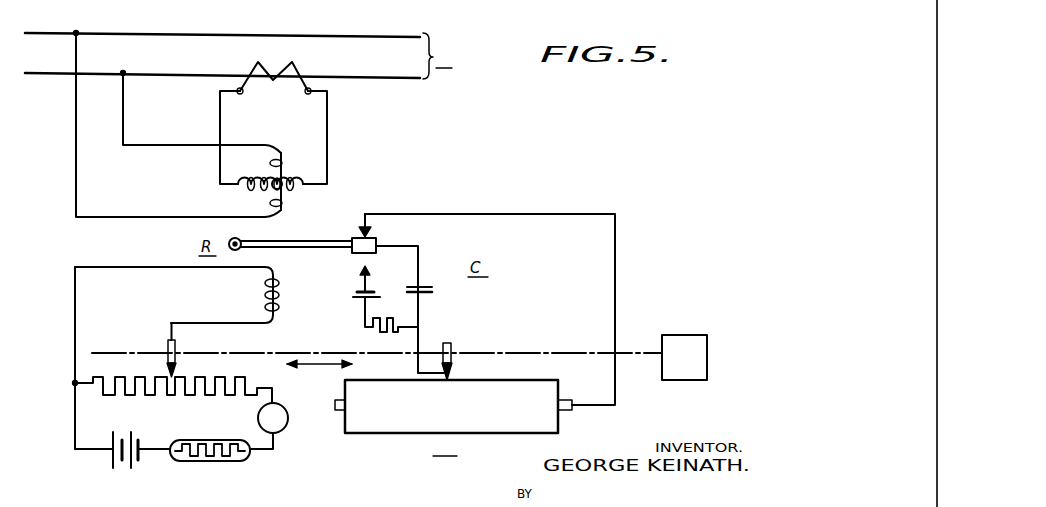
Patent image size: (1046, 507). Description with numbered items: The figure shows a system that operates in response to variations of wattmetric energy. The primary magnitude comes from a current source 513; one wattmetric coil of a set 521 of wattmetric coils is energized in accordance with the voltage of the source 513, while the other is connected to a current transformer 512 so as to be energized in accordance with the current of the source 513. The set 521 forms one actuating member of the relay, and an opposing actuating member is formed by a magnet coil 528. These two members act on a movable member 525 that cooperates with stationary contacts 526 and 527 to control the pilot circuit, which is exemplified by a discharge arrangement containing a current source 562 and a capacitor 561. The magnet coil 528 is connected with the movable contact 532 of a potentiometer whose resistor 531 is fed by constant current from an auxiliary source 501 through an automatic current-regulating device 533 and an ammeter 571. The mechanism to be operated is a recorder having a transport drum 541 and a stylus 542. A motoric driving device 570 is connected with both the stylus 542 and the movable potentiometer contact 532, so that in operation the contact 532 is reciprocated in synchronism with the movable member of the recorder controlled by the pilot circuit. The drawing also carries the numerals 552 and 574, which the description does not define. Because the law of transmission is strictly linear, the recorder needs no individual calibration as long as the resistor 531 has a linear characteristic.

The current source 513 is at (62, 34).
The current transformer 512 is at (249, 68).
The set of wattmetric coils 521 is at (282, 173).
The movable member 525 is at (308, 244).
The stationary contact 527 is at (373, 236).
The stationary contact 526 is at (358, 271).
The current source 562 is at (355, 298).
The capacitor 561 is at (433, 291).
The magnet coil 528 is at (266, 296).
The movable contact 532 is at (169, 376).
The resistor 531 is at (212, 381).
The direction of movement 552 is at (318, 370).
The ammeter 571 is at (258, 418).
The auxiliary source 501 is at (122, 470).
The automatic current-regulating device 533 is at (208, 463).
The stylus 542 is at (457, 378).
The shaft 574 is at (530, 354).
The motoric driving device 570 is at (680, 337).
The transport drum 541 is at (555, 419).